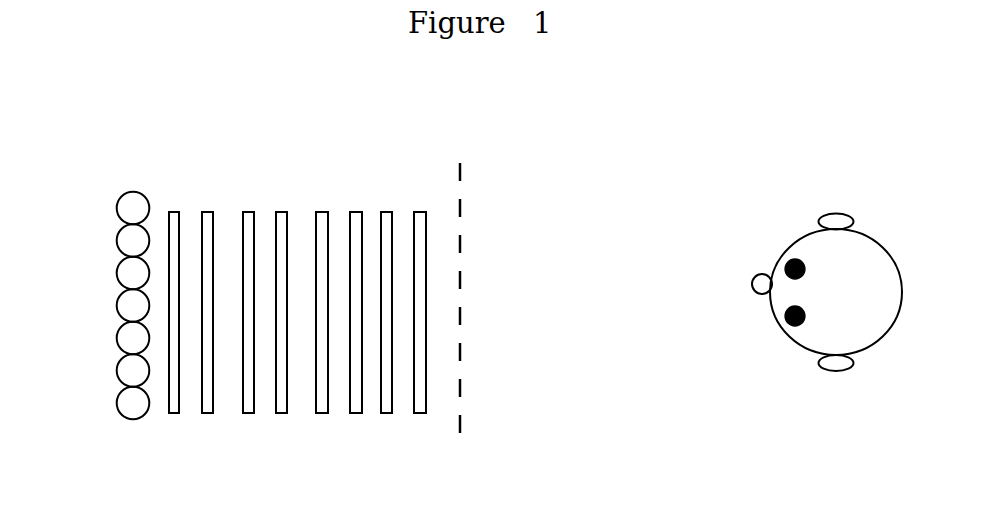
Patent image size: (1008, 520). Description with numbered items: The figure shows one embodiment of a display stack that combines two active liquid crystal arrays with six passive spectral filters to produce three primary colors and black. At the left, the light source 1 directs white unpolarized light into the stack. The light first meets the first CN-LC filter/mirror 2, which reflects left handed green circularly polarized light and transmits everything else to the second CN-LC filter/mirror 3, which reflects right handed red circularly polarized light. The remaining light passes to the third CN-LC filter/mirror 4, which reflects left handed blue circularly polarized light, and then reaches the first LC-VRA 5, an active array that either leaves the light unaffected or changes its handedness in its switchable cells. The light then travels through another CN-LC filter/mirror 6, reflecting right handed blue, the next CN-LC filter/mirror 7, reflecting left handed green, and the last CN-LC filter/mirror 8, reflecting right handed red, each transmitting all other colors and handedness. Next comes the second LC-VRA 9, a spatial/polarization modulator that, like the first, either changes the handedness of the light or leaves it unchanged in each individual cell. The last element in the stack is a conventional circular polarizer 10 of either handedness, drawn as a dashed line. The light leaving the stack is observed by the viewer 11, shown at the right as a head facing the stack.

The light source 1 is at (116, 238).
The first CN-LC filter/mirror 2 is at (183, 211).
The second CN-LC filter/mirror 3 is at (213, 211).
The third CN-LC filter/mirror 4 is at (247, 403).
The first LC-VRA 5 is at (278, 403).
The CN-LC filter/mirror 6 is at (326, 413).
The CN-LC filter/mirror 7 is at (361, 211).
The last CN-LC filter/mirror 8 is at (392, 211).
The second LC-VRA 9 is at (425, 403).
The circular polarizer 10 is at (460, 212).
The viewer 11 is at (788, 247).